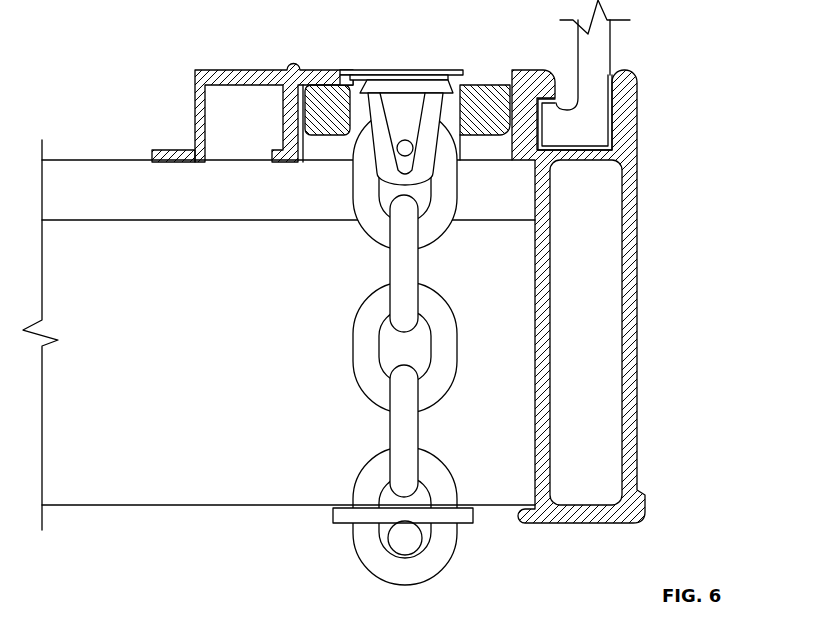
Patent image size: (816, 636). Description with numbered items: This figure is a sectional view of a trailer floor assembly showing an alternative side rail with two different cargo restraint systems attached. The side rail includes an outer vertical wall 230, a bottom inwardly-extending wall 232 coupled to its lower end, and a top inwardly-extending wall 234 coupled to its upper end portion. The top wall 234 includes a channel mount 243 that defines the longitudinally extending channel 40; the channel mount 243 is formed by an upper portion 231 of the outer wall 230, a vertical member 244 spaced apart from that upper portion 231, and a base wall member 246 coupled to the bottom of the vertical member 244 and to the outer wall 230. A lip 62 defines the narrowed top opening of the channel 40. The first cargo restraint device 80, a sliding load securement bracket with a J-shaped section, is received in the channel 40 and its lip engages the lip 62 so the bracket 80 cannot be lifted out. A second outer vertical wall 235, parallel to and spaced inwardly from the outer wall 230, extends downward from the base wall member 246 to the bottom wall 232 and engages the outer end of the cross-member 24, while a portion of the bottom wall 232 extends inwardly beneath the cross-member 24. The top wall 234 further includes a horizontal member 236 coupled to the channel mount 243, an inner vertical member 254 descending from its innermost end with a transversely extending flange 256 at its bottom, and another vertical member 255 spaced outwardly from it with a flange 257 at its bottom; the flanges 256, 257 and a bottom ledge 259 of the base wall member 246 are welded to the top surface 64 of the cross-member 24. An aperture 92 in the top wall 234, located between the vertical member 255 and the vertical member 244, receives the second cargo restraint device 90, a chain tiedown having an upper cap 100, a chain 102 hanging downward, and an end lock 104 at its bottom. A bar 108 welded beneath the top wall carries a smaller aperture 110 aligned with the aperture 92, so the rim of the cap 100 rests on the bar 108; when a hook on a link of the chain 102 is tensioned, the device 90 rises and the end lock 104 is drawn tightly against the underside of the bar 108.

The cross-member 24 is at (170, 505).
The top surface 64 is at (77, 160).
The top, inwardly-extending wall 234 is at (239, 108).
The horizontal member 236 is at (240, 70).
The vertical member 254 is at (198, 108).
The vertical member 255 is at (288, 127).
The transversely extending flange 256 is at (173, 162).
The transversely extending flange 257 is at (287, 162).
The bar 108 is at (327, 133).
The aperture 92 is at (463, 70).
The outer, vertical wall 230 is at (587, 299).
The second outer, vertical wall 235 is at (555, 295).
The lip 62 is at (543, 80).
The vertical member 244 is at (527, 132).
The bottom ledge 259 is at (515, 168).
The channel mount 243 is at (531, 163).
The upper portion 231 is at (625, 132).
The base wall member 246 is at (578, 160).
The bottom, inwardly-extending wall 232 is at (523, 522).
The channel 40 is at (605, 102).
The first cargo restraint device 80 is at (602, 48).
The chain 102 is at (375, 292).
The second cargo restraint device 90 is at (398, 92).
The upper cap 100 is at (405, 68).
The aperture 110 is at (355, 87).
The end lock 104 is at (342, 523).